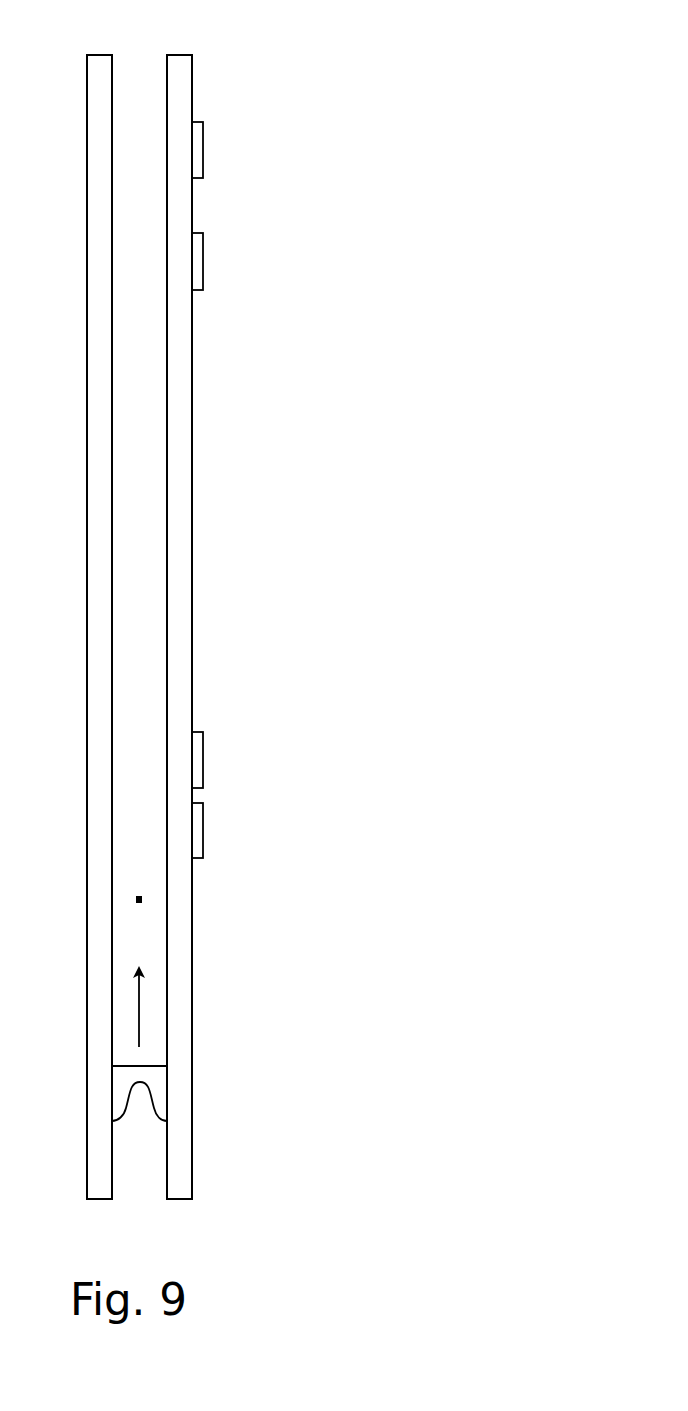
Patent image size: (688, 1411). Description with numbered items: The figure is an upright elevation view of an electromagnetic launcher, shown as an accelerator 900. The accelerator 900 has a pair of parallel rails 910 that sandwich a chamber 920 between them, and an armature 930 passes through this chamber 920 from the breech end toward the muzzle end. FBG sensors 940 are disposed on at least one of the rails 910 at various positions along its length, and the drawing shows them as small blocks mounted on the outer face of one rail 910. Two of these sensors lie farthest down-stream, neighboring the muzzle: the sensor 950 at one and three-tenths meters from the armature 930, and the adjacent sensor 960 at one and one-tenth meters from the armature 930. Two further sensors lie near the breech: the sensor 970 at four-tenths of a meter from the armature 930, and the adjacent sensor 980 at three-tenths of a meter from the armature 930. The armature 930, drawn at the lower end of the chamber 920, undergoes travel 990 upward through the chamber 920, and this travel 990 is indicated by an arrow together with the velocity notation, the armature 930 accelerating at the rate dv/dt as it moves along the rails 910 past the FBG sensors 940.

The accelerator 900 is at (243, 68).
The parallel rails 910 is at (116, 504).
The chamber 920 is at (139, 610).
The armature 930 is at (119, 1121).
The FBG sensors 940 is at (206, 282).
The sensor at position farthest down-stream 950 is at (203, 145).
The sensor adjacent to farthest down-stream position 960 is at (203, 262).
The sensor neighboring the breech 970 is at (203, 765).
The sensor adjacent to breech position 980 is at (203, 843).
The travel 990 is at (140, 1021).